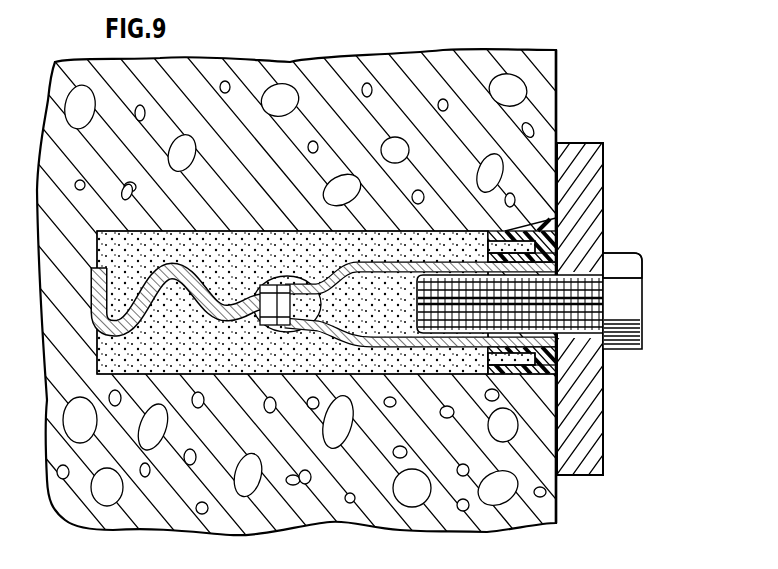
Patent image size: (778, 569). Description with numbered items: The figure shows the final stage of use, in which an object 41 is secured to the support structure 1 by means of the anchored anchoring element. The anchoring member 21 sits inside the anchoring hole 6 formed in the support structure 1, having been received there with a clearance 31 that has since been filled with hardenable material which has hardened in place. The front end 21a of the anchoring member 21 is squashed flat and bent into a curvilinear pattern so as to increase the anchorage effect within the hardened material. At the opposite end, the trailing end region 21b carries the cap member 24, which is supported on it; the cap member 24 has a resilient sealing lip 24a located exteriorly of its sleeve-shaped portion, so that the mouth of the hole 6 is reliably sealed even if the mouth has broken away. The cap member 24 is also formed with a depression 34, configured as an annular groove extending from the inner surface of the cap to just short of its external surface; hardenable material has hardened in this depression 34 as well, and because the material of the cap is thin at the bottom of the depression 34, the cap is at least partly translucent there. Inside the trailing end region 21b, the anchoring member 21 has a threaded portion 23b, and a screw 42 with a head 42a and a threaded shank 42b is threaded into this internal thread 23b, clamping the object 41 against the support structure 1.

The support structure 1 is at (366, 72).
The anchoring hole 6 is at (140, 252).
The anchoring member 21 is at (380, 349).
The front end 21a is at (131, 336).
The trailing end region 21b is at (533, 376).
The threaded portion 23b is at (566, 352).
The cap member 24 is at (533, 228).
The sealing lip 24a is at (565, 208).
The clearance 31 is at (420, 376).
The depression 34 is at (490, 232).
The object 41 is at (584, 453).
The screw 42 is at (645, 333).
The head 42a is at (628, 296).
The threaded shank 42b is at (612, 284).